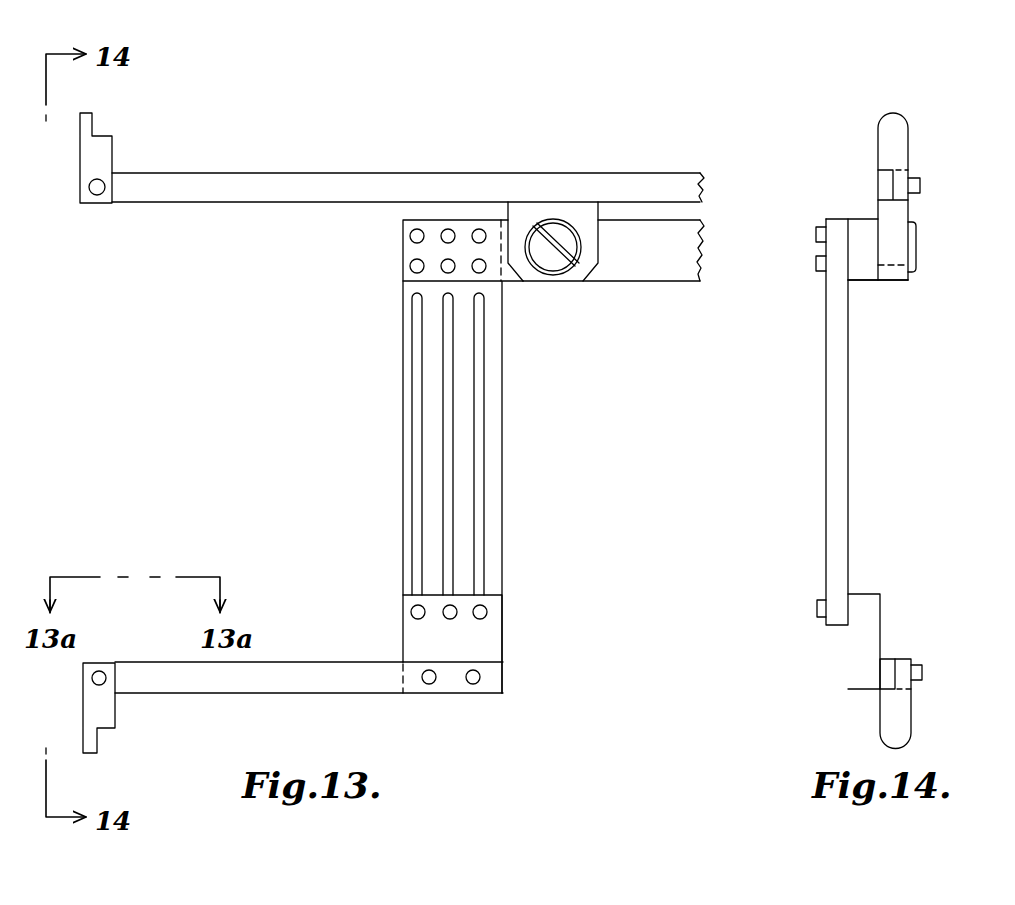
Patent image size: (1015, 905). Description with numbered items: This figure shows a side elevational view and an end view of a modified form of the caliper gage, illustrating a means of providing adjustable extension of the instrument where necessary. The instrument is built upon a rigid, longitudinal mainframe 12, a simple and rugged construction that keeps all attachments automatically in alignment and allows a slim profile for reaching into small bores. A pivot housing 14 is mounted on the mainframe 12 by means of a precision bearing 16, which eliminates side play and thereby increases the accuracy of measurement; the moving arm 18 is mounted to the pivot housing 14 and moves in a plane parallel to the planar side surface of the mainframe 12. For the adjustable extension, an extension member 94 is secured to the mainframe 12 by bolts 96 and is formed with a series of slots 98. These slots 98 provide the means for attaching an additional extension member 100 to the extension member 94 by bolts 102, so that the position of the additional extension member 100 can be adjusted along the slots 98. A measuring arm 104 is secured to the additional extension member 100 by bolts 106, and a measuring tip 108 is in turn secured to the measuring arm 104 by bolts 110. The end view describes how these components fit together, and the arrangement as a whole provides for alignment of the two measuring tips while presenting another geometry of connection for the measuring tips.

In FIG. 13, the mainframe 12 is at (621, 281).
In FIG. 14, the mainframe 12 is at (871, 283).
In FIG. 14, the pivot housing 14 is at (908, 278).
In FIG. 14, the precision bearing 16 is at (916, 240).
In FIG. 13, the moving arm 18 is at (288, 172).
In FIG. 13, the extension member 94 is at (402, 398).
In FIG. 14, the extension member 94 is at (824, 441).
In FIG. 14, the bolts 96 is at (816, 233).
In FIG. 13, the slots 98 is at (431, 477).
In FIG. 13, the additional extension member 100 is at (503, 629).
In FIG. 14, the additional extension member 100 is at (880, 620).
In FIG. 14, the bolts 102 is at (817, 607).
In FIG. 13, the measuring arm 104 is at (248, 695).
In FIG. 13, the bolts 106 is at (432, 684).
In FIG. 13, the measuring tip 108 is at (80, 162).
In FIG. 14, the measuring tip 108 is at (908, 133).
In FIG. 13, the bolts 110 is at (97, 195).
In FIG. 14, the bolts 110 is at (922, 672).